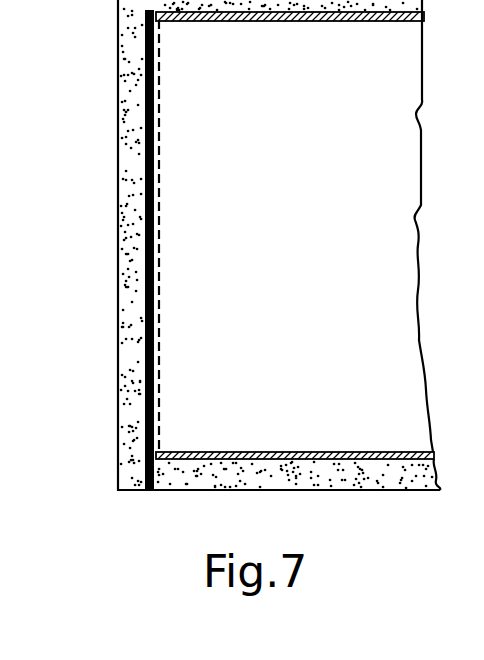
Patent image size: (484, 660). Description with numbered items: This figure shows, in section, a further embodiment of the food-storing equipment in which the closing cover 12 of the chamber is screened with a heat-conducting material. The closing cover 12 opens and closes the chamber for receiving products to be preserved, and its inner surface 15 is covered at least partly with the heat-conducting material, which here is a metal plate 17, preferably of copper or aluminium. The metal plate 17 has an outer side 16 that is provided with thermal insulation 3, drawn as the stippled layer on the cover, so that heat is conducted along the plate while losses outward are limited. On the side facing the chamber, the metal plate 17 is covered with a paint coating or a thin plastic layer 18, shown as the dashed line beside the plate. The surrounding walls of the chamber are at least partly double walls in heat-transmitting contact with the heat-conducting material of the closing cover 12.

The closing cover 12 is at (118, 21).
The inner surface 15 is at (138, 63).
The thermal insulation 3 is at (130, 242).
The outer side 16 is at (150, 338).
The metal plate 17 is at (158, 168).
The thin plastic layer 18 is at (158, 123).